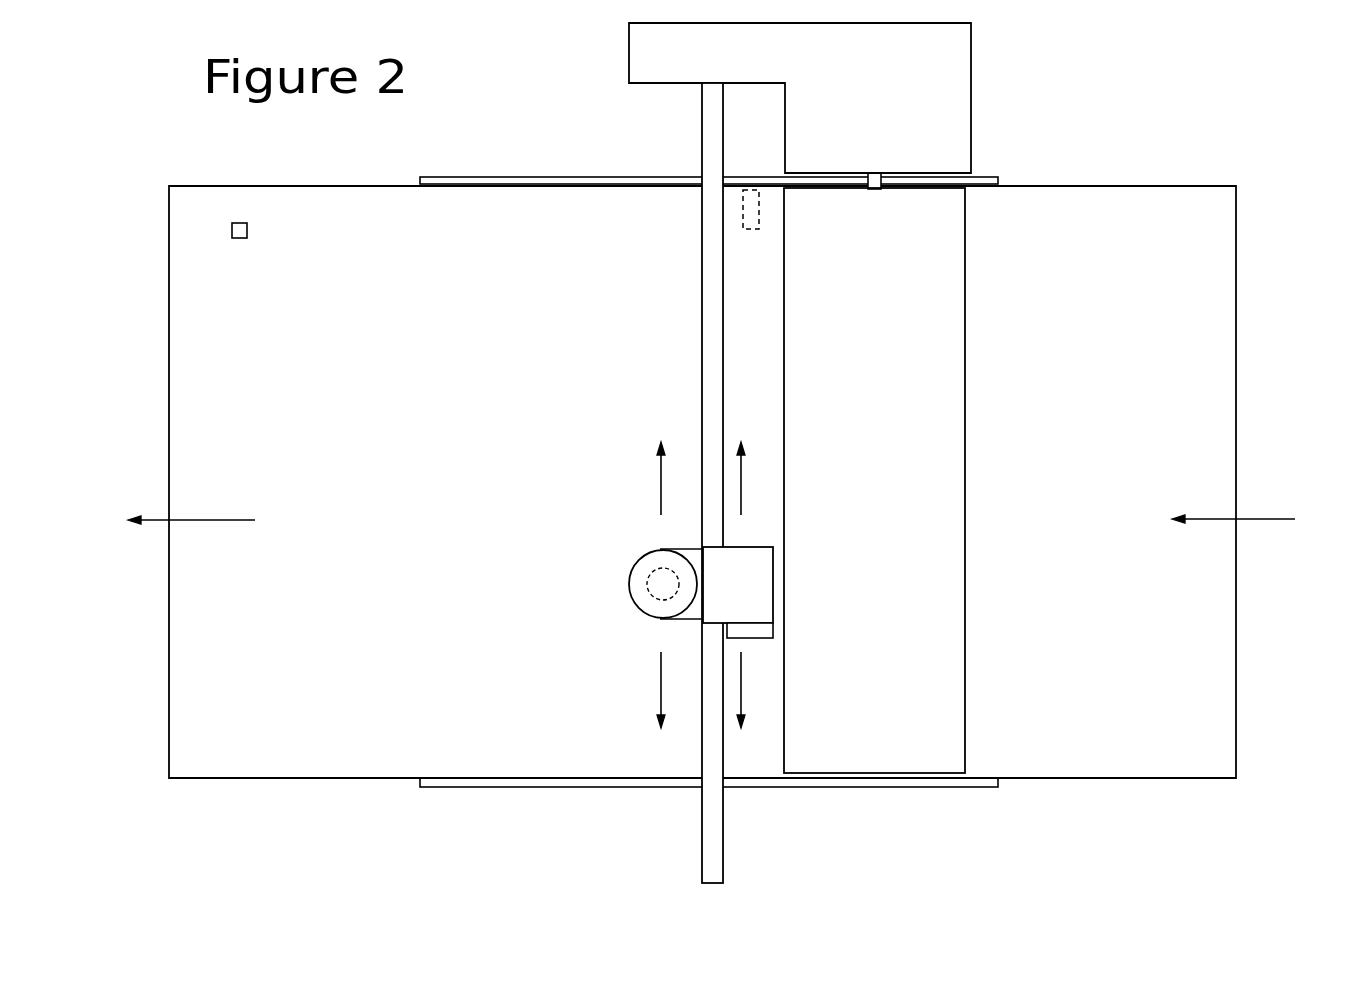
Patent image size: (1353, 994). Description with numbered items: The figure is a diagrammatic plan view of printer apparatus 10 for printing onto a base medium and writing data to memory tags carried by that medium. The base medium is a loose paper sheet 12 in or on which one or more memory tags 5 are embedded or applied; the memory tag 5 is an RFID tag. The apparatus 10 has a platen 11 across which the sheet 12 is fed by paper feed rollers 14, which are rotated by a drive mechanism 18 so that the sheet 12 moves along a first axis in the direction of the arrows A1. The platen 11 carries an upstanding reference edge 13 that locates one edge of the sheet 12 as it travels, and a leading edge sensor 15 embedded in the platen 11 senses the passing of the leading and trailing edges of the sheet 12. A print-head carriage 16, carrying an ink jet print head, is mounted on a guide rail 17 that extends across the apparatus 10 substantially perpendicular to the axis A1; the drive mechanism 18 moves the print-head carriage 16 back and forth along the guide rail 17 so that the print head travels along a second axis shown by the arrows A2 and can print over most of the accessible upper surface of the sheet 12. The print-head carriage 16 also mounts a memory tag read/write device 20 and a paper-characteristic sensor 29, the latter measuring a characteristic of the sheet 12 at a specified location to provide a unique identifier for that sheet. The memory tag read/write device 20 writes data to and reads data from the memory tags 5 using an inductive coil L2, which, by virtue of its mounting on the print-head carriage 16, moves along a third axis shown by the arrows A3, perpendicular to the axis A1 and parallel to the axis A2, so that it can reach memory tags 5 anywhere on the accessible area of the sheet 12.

The memory tag 5 is at (247, 227).
The apparatus 10 is at (1098, 113).
The platen 11 is at (510, 785).
The sheet 12 is at (1237, 294).
The reference edge 13 is at (538, 176).
The paper feed rollers 14 is at (938, 748).
The leading edge sensor 15 is at (751, 208).
The print-head carriage 16 is at (738, 585).
The guide rail 17 is at (702, 803).
The drive mechanism 18 is at (800, 98).
The memory tag read/write device 20 is at (628, 583).
The paper-characteristic sensor 29 is at (767, 632).
The first axis direction arrows A1 is at (207, 518).
The second axis direction arrows A2 is at (741, 490).
The third axis direction arrows A3 is at (662, 475).
The inductive coil L2 is at (663, 584).